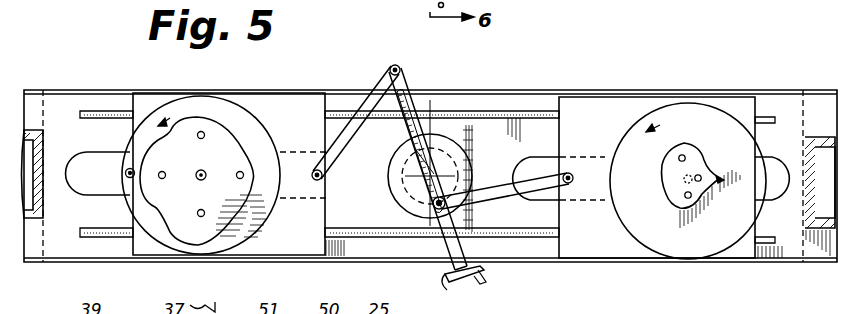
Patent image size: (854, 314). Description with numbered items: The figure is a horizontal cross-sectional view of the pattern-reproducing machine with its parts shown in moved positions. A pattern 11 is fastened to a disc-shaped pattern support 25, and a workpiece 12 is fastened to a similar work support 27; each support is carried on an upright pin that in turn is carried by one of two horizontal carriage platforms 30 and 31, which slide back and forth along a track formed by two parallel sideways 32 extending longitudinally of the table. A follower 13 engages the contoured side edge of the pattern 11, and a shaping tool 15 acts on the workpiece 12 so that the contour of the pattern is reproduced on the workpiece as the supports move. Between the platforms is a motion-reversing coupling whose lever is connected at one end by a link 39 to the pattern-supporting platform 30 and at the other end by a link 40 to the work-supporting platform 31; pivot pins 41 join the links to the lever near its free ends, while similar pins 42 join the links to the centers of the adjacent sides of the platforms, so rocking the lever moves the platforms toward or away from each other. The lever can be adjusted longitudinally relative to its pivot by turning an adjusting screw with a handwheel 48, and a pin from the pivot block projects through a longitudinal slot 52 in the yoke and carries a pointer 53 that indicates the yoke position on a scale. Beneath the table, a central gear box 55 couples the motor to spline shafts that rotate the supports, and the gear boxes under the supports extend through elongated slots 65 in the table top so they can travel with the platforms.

The pattern 11 is at (222, 145).
The workpiece 12 is at (698, 152).
The follower 13 is at (124, 173).
The shaping tool 15 is at (722, 186).
The pattern support 25 is at (263, 142).
The work support 27 is at (696, 258).
The pattern-supporting carriage platform 30 is at (273, 257).
The work-supporting carriage platform 31 is at (612, 259).
The sideways 32 is at (93, 111).
The link 39 is at (372, 96).
The link 40 is at (503, 192).
The pivot pin 41 is at (402, 68).
The pin 42 is at (322, 181).
The handwheel 48 is at (464, 289).
The longitudinal slot 52 is at (432, 132).
The pointer 53 is at (432, 174).
The gear box 55 is at (408, 166).
The elongated slots 65 is at (94, 194).